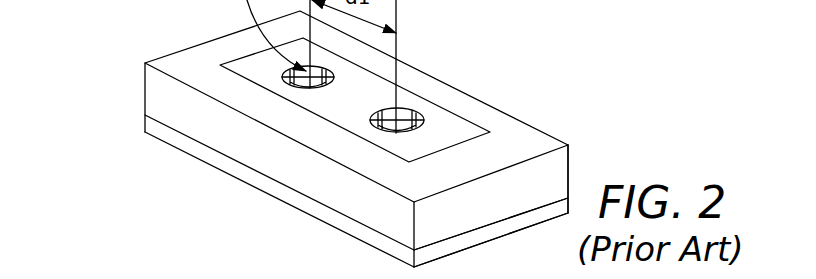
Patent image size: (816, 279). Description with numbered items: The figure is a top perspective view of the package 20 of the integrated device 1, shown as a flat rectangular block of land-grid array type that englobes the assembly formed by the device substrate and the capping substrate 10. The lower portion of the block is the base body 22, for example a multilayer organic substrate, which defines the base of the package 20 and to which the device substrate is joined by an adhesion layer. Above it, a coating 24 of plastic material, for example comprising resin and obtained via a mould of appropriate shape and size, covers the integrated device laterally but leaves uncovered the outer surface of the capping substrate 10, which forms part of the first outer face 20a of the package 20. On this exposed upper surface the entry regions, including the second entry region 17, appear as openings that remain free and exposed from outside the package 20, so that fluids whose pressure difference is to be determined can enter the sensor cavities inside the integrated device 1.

The integrated device 1 is at (371, 139).
The capping substrate 10 is at (337, 100).
The second entry region 17 is at (400, 124).
The package 20 is at (366, 139).
The first outer face 20a is at (165, 53).
The base body 22 is at (258, 185).
The coating 24 is at (553, 168).